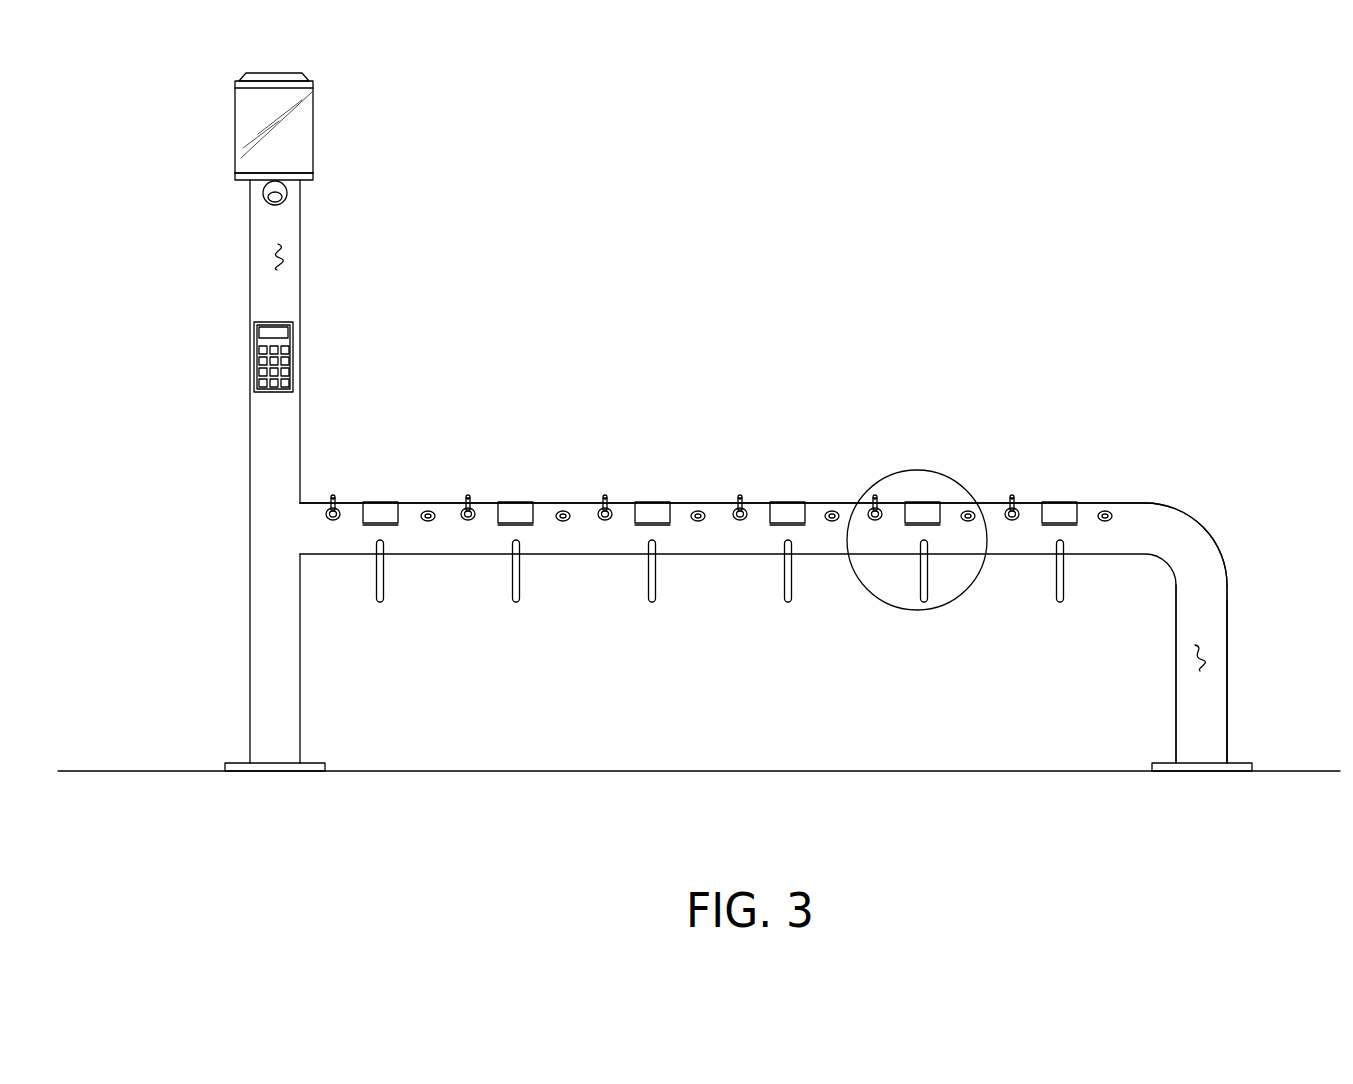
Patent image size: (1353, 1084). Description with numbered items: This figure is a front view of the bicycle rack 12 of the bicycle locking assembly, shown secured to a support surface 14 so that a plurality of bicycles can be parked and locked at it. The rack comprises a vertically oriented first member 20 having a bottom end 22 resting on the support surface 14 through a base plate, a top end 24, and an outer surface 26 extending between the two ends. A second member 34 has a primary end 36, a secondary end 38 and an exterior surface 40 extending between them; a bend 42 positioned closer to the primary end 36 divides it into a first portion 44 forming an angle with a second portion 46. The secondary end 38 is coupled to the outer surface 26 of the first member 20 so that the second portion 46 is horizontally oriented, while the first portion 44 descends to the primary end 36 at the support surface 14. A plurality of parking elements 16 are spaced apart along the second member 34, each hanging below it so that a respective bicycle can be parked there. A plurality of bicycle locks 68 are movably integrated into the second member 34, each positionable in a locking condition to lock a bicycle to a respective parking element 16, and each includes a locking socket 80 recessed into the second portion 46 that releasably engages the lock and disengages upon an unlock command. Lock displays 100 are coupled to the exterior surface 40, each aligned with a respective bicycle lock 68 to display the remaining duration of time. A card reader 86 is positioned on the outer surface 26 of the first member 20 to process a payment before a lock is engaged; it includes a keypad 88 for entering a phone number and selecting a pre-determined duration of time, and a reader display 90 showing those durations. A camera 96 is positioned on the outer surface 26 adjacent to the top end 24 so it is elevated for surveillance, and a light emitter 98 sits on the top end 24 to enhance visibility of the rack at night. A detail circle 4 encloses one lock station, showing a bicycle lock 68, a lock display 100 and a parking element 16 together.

The detail circle of tap station 4 is at (925, 470).
The bicycle rack 12 is at (1210, 513).
The support surface 14 is at (143, 771).
The parking elements 16 is at (390, 575).
The first member 20 is at (252, 278).
The bottom end 22 is at (274, 772).
The top end 24 is at (275, 172).
The outer surface 26 is at (285, 258).
The second member 34 is at (703, 502).
The primary end 36 is at (1203, 772).
The secondary end 38 is at (300, 503).
The exterior surface 40 is at (1206, 657).
The bend 42 is at (1173, 502).
The first portion 44 is at (1232, 729).
The second portion 46 is at (1055, 488).
The bicycle locks 68 is at (1012, 485).
The locking socket 80 is at (1105, 510).
The card reader 86 is at (285, 355).
The keypad 88 is at (275, 372).
The reader display 90 is at (262, 333).
The camera 96 is at (266, 201).
The light emitter 98 is at (235, 130).
The lock displays 100 is at (387, 512).